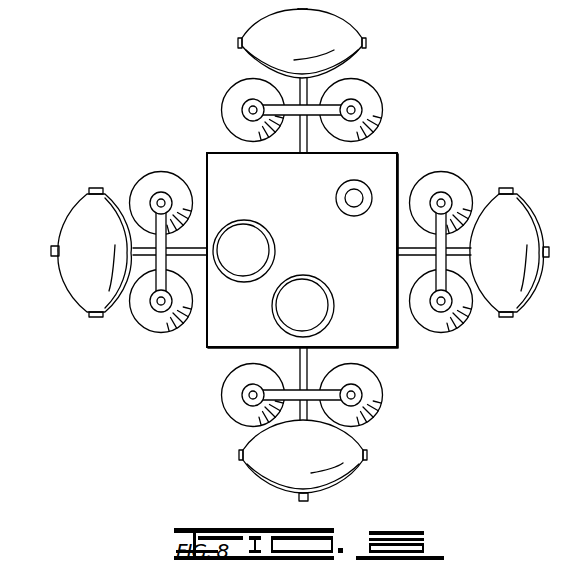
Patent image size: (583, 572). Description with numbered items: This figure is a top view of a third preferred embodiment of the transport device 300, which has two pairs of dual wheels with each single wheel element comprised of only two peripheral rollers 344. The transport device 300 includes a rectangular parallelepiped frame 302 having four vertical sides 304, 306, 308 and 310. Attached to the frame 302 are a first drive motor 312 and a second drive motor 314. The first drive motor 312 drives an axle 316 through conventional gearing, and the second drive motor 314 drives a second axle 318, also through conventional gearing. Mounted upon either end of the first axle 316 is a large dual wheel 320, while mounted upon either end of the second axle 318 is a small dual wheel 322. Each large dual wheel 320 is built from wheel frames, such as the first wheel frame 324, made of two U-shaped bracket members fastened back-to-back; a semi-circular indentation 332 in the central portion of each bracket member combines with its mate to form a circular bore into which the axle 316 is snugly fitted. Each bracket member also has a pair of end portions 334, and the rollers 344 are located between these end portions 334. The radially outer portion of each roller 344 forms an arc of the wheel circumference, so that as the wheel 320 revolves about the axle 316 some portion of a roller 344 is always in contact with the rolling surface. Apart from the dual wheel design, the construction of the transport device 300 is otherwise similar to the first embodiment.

The transport device 300 is at (146, 70).
The frame 302 is at (402, 161).
The vertical side 304 is at (383, 155).
The vertical side 306 is at (398, 339).
The vertical side 308 is at (222, 352).
The vertical side 310 is at (198, 156).
The first drive motor 312 is at (250, 223).
The second drive motor 314 is at (304, 278).
The axle 316 is at (52, 247).
The second axle 318 is at (308, 499).
The large dual wheel 320 is at (86, 329).
The small dual wheel 322 is at (362, 69).
The first wheel frame 324 is at (562, 318).
The end portions 334 is at (567, 264).
The semi-circular indentation 332 is at (571, 344).
The rollers 344 is at (442, 173).